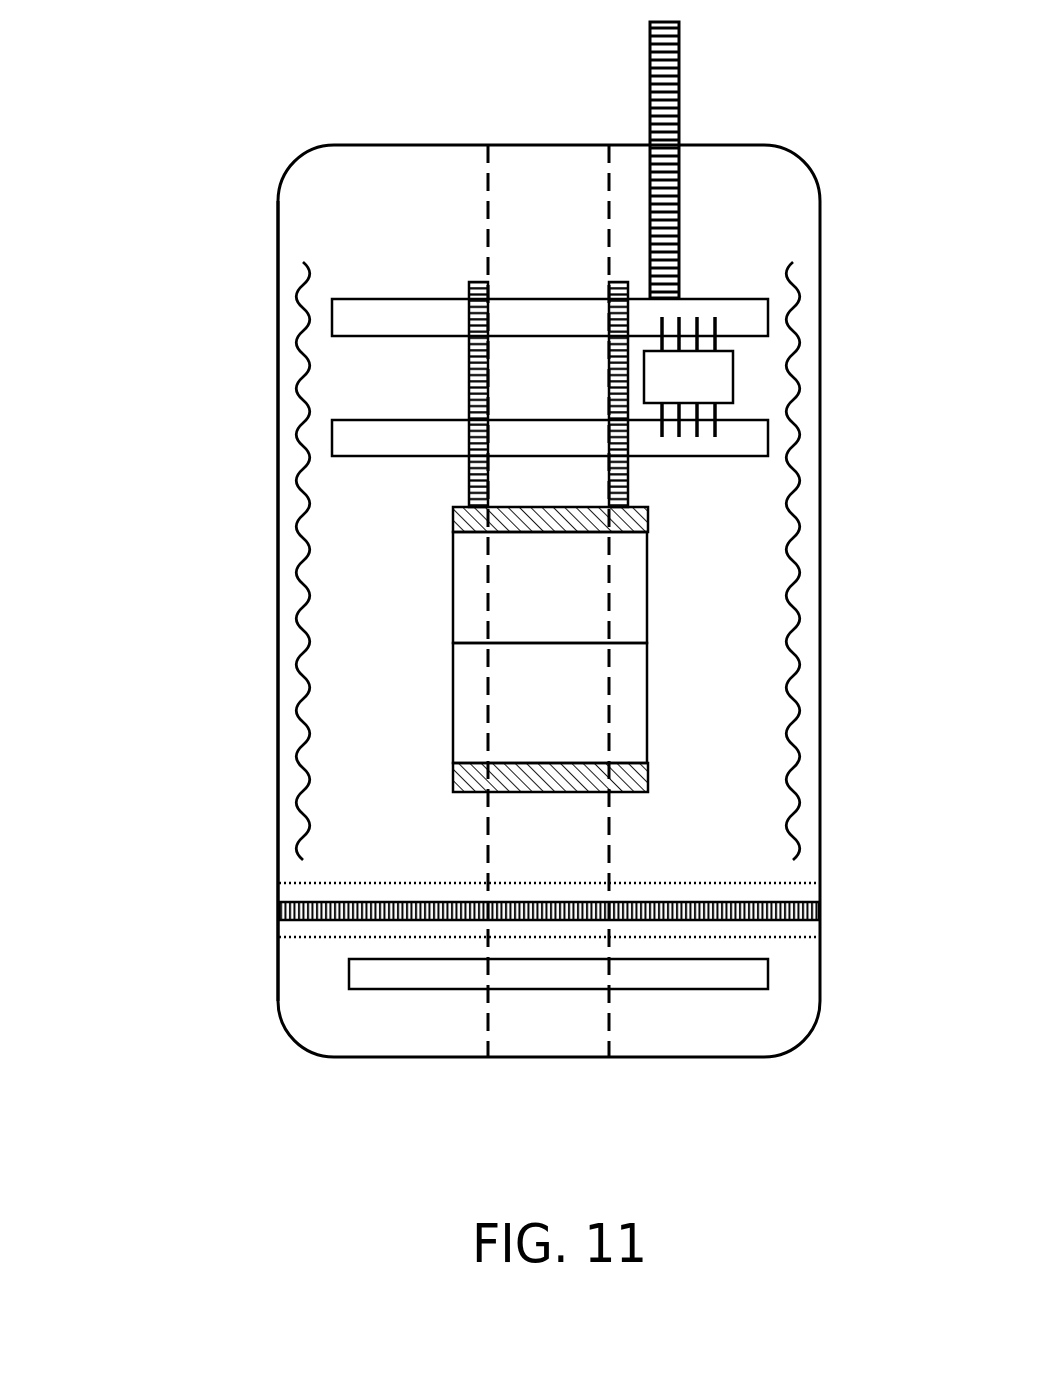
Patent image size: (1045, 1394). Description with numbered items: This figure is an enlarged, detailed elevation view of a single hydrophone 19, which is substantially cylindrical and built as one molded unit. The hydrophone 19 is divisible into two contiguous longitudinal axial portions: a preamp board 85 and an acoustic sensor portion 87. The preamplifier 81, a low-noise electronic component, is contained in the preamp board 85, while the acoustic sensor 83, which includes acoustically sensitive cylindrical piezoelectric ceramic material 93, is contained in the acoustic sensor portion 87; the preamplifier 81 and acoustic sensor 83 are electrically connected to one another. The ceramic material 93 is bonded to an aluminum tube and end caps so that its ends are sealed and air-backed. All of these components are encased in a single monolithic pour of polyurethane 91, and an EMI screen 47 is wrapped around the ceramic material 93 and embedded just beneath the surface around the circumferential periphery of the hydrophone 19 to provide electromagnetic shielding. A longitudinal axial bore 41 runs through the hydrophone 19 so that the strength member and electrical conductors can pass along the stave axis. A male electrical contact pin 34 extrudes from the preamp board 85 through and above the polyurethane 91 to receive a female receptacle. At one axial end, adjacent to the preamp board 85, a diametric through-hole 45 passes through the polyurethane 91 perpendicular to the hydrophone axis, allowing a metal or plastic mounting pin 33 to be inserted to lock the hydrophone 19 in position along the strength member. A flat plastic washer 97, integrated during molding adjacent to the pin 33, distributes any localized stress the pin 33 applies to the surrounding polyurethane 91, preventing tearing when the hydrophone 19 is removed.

The hydrophone 19 is at (215, 195).
The bore 41 is at (549, 170).
The electrical contact pin 34 is at (680, 92).
The preamp board 85 is at (768, 318).
The preamplifier 81 is at (662, 367).
The acoustic sensor portion 87 is at (452, 520).
The ceramic material 93 is at (627, 590).
The acoustic sensor 83 is at (677, 643).
The EMI screen 47 is at (290, 725).
The polyurethane potting material 91 is at (282, 590).
The diametric through-hole 45 is at (813, 893).
The mounting pin 33 is at (278, 907).
The washer 97 is at (663, 990).